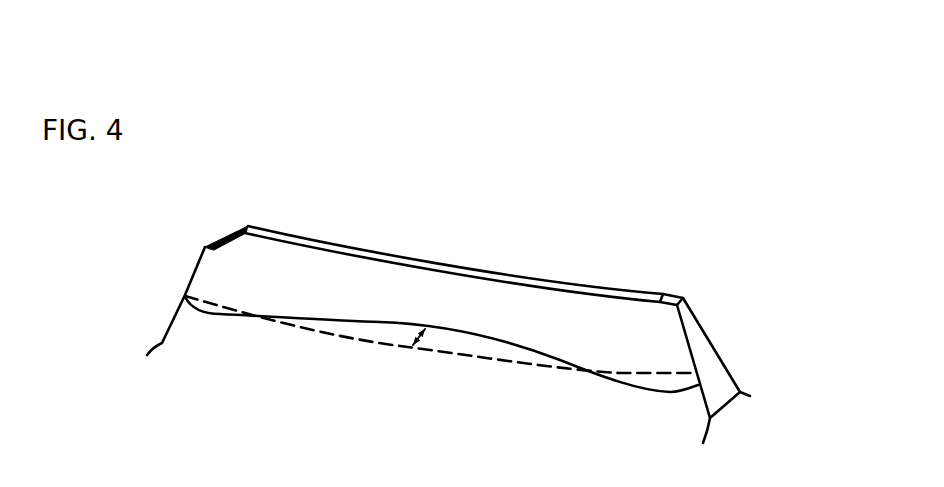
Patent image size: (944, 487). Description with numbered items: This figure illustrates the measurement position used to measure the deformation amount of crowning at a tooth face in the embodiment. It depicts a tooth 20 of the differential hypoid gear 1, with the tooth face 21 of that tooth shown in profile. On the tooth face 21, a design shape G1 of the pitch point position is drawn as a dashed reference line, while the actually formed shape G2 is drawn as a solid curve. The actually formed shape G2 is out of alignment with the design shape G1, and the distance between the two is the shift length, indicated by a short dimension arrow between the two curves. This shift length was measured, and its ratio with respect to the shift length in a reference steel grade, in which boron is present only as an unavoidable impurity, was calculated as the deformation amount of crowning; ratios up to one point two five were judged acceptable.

The differential hypoid gear 1 is at (736, 376).
The tooth 20 is at (638, 292).
The tooth face 21 is at (650, 337).
The design shape G1 is at (308, 327).
The actually formed shape G2 is at (360, 318).